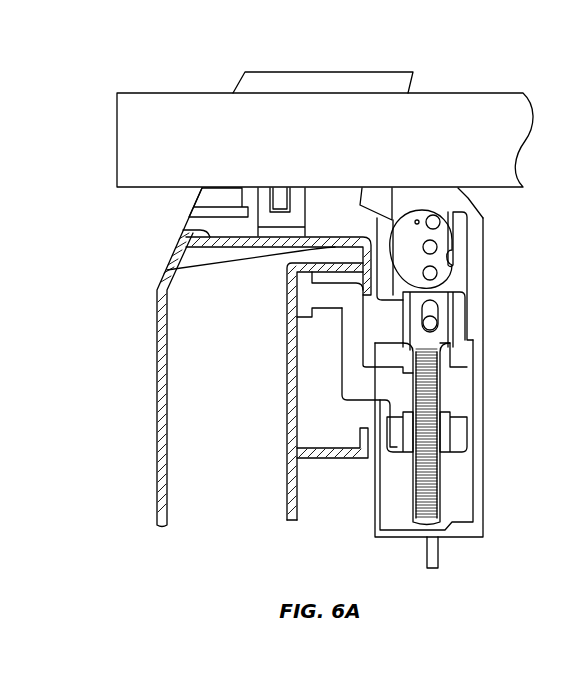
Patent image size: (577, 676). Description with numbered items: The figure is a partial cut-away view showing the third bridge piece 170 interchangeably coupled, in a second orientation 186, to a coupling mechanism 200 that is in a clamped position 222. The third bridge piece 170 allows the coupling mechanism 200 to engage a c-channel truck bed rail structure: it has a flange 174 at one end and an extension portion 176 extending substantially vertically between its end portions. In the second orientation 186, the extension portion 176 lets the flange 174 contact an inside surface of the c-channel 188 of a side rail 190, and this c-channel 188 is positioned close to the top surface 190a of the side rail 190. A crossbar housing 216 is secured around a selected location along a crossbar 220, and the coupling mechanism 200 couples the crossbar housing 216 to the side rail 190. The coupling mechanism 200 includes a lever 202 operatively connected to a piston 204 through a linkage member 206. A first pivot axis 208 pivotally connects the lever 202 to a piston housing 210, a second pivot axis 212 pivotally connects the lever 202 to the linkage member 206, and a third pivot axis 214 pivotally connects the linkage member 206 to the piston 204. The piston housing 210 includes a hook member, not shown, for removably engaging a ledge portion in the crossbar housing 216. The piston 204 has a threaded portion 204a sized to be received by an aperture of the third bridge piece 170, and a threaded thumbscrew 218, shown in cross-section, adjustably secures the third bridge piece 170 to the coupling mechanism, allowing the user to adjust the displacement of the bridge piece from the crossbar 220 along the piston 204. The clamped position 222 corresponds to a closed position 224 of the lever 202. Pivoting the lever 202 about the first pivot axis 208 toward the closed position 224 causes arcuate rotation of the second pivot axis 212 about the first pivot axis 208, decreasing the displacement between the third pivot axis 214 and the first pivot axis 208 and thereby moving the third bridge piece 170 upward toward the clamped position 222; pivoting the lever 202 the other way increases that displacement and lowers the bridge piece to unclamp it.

The crossbar 220 is at (153, 91).
The crossbar housing 216 is at (300, 71).
The linkage member 206 is at (392, 212).
The second pivot axis 212 is at (437, 216).
The first pivot axis 208 is at (437, 248).
The third pivot axis 214 is at (437, 274).
The piston housing 210 is at (470, 205).
The threaded portion 204a is at (433, 396).
The threaded thumbscrew 218 is at (397, 447).
The piston 204 is at (442, 490).
The lever 202 is at (484, 487).
The coupling mechanism 200 is at (447, 379).
The closed position 224 is at (460, 556).
The third bridge piece 170 is at (353, 399).
The flange 174 is at (306, 293).
The second orientation 186 is at (304, 340).
The extension portion 176 is at (345, 338).
The clamped position 222 is at (309, 390).
The c-channel 188 is at (323, 410).
The side rail 190 is at (157, 385).
The top surface 190a is at (290, 252).